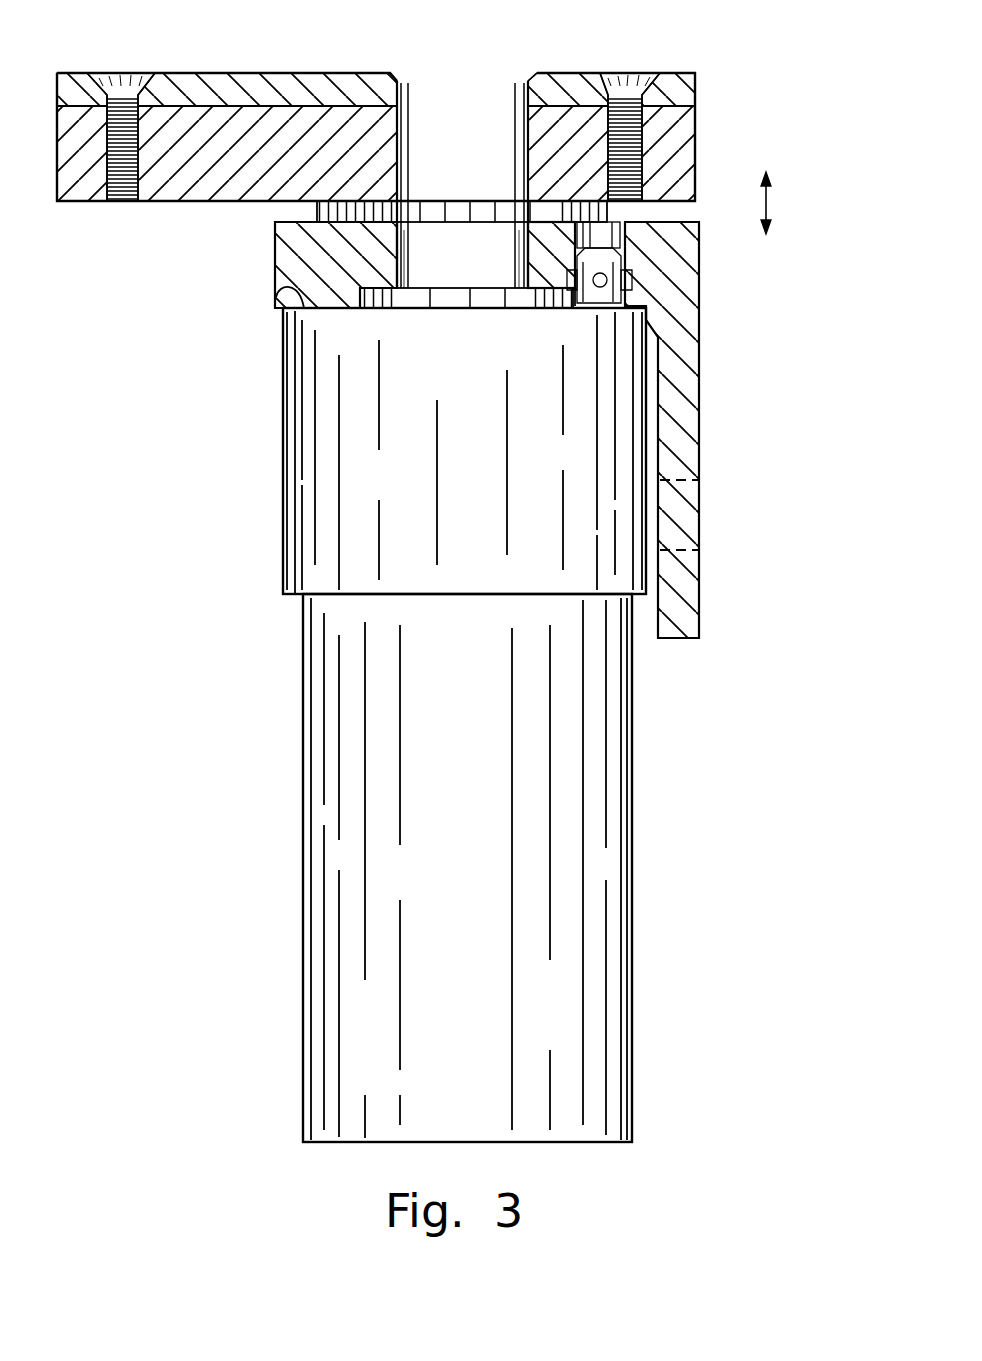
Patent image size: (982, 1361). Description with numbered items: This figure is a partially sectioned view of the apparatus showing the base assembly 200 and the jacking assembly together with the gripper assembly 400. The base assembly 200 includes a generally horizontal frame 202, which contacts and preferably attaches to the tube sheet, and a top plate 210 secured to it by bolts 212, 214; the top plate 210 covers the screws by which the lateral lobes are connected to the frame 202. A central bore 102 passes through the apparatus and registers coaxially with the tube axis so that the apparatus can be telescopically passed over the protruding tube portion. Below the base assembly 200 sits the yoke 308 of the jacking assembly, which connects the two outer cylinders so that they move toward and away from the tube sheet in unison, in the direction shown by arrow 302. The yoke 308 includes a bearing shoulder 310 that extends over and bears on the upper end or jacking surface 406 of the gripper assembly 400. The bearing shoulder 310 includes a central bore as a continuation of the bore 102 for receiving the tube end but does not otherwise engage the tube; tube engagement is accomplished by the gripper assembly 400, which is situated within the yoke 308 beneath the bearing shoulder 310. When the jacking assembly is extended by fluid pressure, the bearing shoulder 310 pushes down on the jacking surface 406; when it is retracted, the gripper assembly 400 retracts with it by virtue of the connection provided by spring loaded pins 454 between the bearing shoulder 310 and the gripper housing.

The central bore 102 is at (514, 130).
The base assembly 200 is at (51, 180).
The base assembly frame 202 is at (698, 148).
The top plate 210 is at (697, 92).
The bolt 212 is at (113, 73).
The bolt 214 is at (633, 73).
The arrow 302 is at (772, 200).
The yoke 308 is at (698, 372).
The bearing shoulder 310 is at (277, 258).
The gripper assembly 400 is at (282, 425).
The upper end or jacking surface 406 is at (279, 290).
The spring loaded pin 454 is at (632, 278).